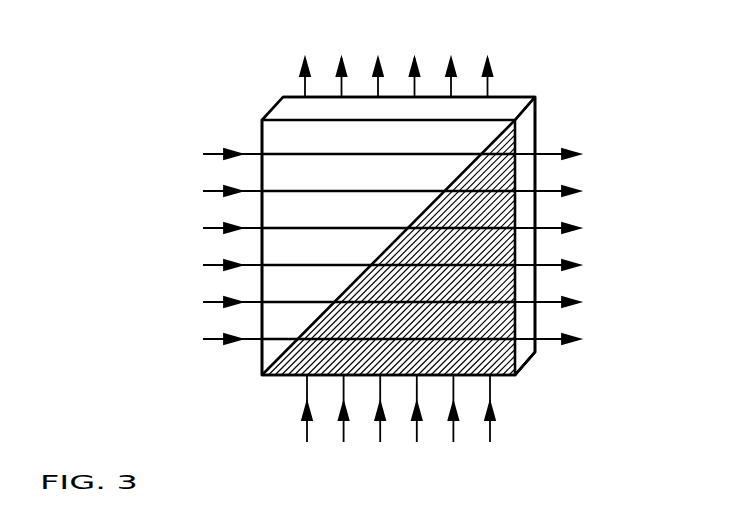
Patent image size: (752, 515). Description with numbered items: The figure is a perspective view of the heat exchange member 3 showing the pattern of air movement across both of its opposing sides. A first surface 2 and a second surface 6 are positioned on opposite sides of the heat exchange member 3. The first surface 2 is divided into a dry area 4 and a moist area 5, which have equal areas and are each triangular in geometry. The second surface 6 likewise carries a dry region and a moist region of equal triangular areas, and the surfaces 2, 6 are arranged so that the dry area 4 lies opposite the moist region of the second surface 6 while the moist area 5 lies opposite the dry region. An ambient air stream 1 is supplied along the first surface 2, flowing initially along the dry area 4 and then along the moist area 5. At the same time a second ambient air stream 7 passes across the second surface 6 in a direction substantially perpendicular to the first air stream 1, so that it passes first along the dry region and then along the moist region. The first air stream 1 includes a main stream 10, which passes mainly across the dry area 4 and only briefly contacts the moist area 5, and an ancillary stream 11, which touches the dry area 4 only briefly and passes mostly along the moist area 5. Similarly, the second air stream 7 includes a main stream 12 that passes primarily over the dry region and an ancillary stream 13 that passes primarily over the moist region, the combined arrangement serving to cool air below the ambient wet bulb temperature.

The ambient air stream 1 is at (207, 135).
The first surface 2 is at (280, 118).
The heat exchange member 3 is at (522, 95).
The dry area 4 is at (277, 140).
The moist area 5 is at (505, 376).
The second surface 6 is at (505, 112).
The second ambient air stream 7 is at (288, 437).
The main stream 10 is at (578, 138).
The ancillary stream 11 is at (578, 290).
The main stream 12 is at (402, 64).
The ancillary stream 13 is at (290, 64).